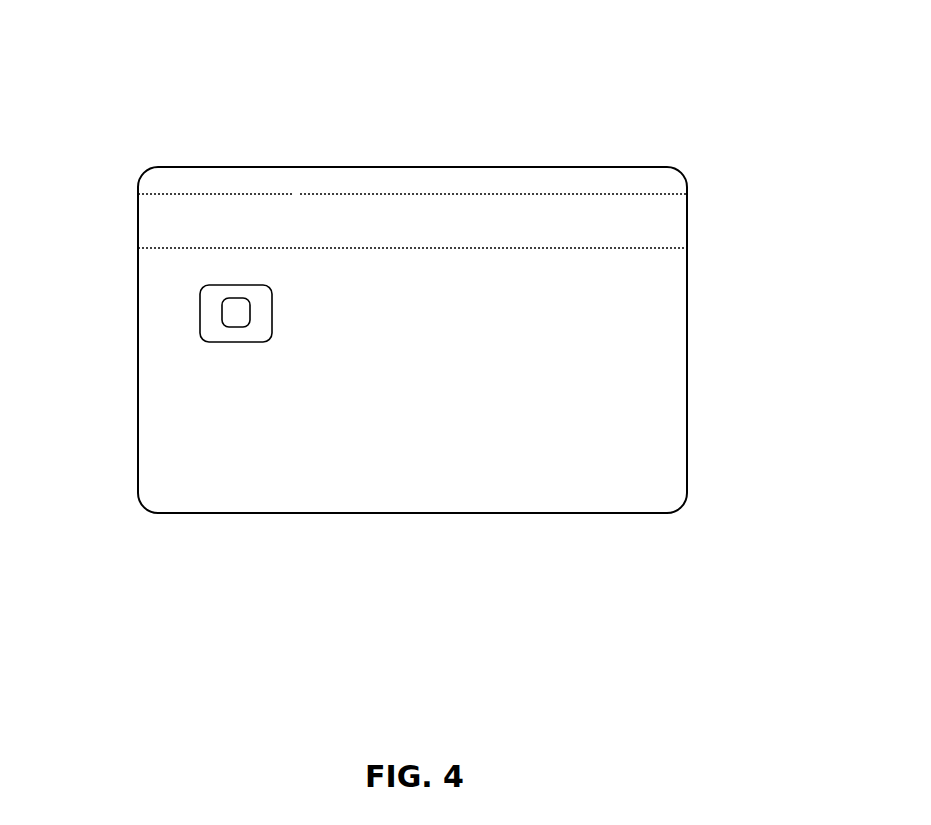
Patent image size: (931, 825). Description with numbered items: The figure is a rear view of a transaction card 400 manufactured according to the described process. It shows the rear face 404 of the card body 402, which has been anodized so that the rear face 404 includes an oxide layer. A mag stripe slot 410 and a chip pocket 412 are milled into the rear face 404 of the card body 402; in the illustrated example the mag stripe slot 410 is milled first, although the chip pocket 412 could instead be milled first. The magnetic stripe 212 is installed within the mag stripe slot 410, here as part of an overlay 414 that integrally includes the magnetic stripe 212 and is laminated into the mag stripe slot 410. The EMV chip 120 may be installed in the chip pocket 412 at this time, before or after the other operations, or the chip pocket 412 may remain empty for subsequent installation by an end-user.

The transaction card 400 is at (200, 94).
The card body 402 is at (688, 359).
The rear face 404 is at (529, 471).
The mag stripe slot 410 is at (626, 256).
The chip pocket 412 is at (274, 344).
The overlay 414 is at (320, 227).
The magnetic stripe 212 is at (502, 213).
The EMV chip 120 is at (233, 318).